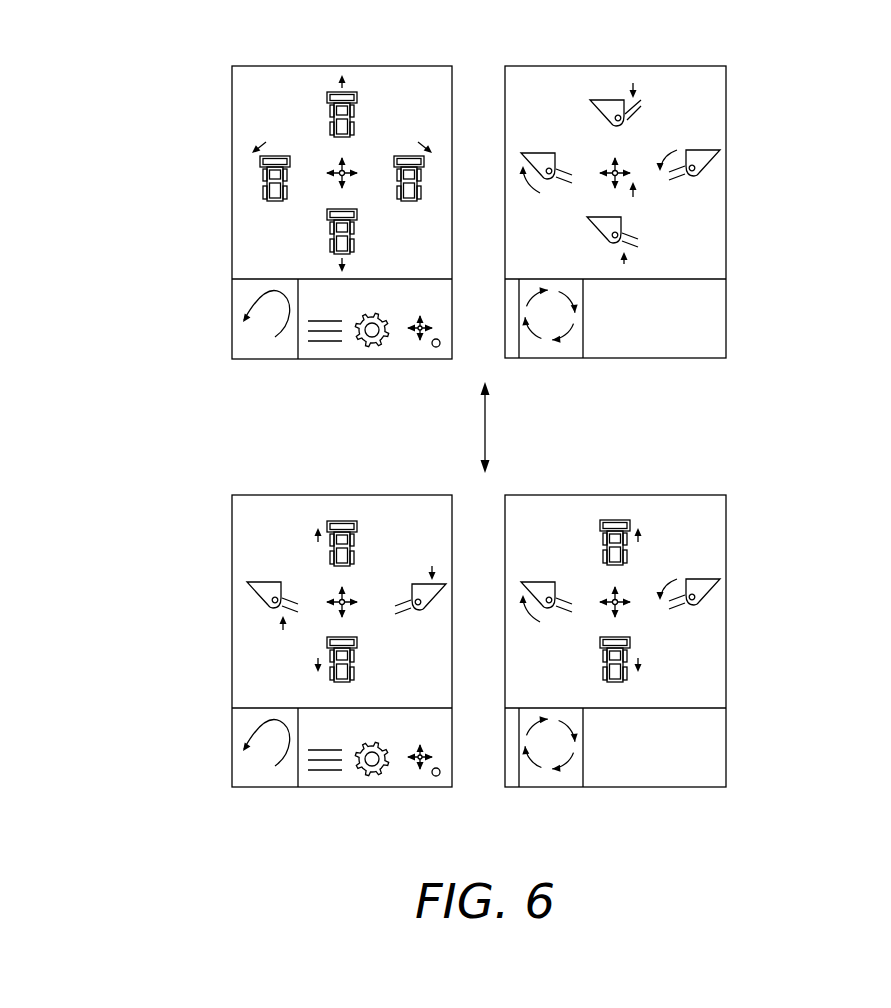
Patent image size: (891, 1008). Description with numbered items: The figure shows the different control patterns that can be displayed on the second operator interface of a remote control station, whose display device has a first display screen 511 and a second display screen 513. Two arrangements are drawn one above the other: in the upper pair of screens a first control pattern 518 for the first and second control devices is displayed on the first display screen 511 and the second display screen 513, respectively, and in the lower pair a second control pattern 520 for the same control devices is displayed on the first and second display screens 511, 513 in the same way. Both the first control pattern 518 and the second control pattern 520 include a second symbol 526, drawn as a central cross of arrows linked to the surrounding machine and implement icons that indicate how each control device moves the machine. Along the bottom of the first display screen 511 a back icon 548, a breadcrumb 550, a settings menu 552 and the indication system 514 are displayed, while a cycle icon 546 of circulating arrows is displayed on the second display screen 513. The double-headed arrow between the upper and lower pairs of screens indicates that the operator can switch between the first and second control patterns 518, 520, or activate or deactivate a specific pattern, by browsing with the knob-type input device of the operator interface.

The first display screen 511 is at (202, 105).
The second display screen 513 is at (762, 128).
The first control pattern 518 is at (687, 92).
The second control pattern 520 is at (676, 518).
The second symbol 526 is at (346, 170).
The cycle icon 546 is at (562, 318).
The back icon 548 is at (262, 323).
The breadcrumb 550 is at (325, 343).
The settings menu 552 is at (366, 347).
The indication system 514 is at (409, 358).